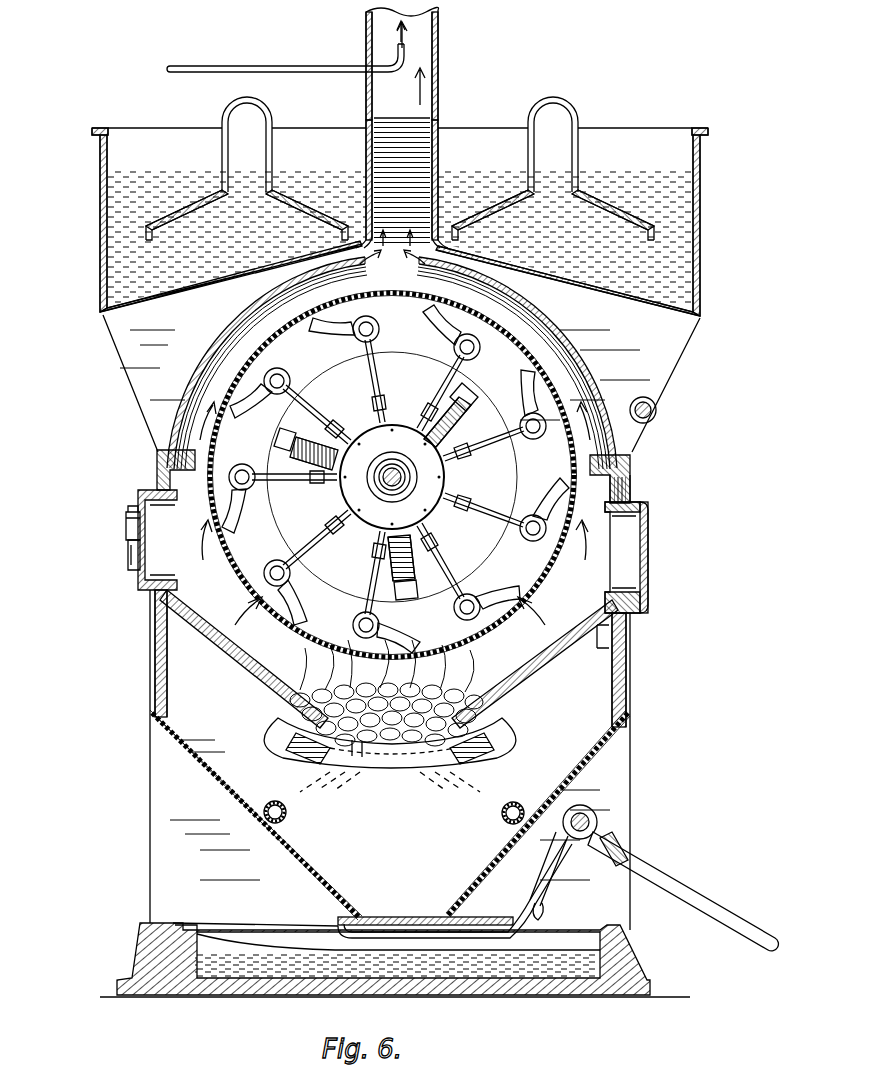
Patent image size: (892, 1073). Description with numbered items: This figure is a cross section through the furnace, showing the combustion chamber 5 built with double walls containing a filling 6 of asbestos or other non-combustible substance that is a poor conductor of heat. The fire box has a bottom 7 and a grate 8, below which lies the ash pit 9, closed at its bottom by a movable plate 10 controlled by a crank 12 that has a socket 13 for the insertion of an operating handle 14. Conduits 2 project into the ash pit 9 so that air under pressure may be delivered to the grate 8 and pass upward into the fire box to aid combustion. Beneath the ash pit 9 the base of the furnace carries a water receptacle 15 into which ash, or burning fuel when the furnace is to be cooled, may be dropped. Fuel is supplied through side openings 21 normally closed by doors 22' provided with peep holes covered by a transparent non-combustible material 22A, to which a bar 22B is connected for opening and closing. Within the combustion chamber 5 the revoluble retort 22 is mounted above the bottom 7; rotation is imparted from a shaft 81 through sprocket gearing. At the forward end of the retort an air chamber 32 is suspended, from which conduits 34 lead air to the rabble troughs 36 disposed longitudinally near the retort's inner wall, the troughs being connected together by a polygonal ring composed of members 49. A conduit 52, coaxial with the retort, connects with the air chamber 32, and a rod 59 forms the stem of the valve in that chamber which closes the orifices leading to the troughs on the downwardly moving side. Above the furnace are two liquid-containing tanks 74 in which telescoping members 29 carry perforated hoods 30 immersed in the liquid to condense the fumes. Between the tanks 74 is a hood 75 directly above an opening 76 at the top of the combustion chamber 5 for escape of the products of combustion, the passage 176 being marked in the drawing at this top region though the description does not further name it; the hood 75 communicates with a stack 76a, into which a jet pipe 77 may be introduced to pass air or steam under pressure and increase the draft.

The conduits 2 is at (268, 804).
The combustion chamber 5 is at (405, 760).
The filling 6 is at (630, 480).
The bottom 7 is at (528, 665).
The grate 8 is at (390, 755).
The ash pit 9 is at (390, 815).
The movable plate 10 is at (372, 915).
The crank 12 is at (545, 895).
The socket 13 is at (618, 840).
The handle 14 is at (680, 878).
The water receptacle 15 is at (640, 958).
The side openings 21 is at (630, 535).
The revoluble retort 22 is at (425, 465).
The doors 22' is at (171, 540).
The transparent non-combustible material 22A is at (128, 555).
The bar 22B is at (126, 522).
The member 29 is at (400, 144).
The hood 30 is at (185, 205).
The air chamber 32 is at (392, 476).
The conduits 34 is at (380, 378).
The rabble troughs 36 is at (284, 505).
The members 49 is at (322, 490).
The conduit 52 is at (420, 470).
The rod 59 is at (395, 488).
The liquid-containing tanks 74 is at (103, 190).
The hood 75 is at (420, 140).
The opening 76 is at (402, 184).
The stack 76a is at (440, 52).
The jet pipe 77 is at (395, 52).
The shaft 81 is at (656, 405).
The opening 176 is at (392, 262).